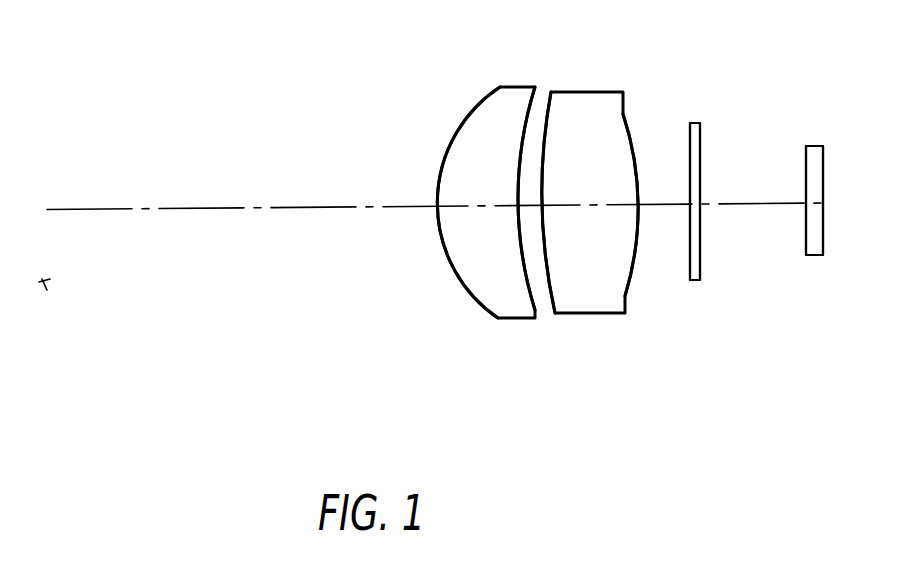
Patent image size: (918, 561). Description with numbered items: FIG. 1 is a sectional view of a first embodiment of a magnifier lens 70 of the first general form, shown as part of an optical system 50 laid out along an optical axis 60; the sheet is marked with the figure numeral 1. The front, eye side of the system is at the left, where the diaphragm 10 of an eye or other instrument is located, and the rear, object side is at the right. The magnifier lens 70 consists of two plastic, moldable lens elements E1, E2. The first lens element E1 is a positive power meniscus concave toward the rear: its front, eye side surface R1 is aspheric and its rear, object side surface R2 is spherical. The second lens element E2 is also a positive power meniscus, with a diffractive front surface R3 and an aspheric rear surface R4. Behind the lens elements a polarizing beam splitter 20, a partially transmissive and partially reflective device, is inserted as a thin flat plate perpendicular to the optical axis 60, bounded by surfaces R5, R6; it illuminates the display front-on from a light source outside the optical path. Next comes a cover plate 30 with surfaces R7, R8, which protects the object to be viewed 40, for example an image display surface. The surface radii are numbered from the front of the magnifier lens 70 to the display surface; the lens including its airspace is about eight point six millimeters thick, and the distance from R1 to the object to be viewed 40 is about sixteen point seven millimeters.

The imaging lens system 1 is at (44, 135).
The diaphragm 10 is at (46, 285).
The polarizing beam splitter 20 is at (696, 205).
The cover plate 30 is at (793, 202).
The object to be viewed 40 is at (849, 202).
The optical system 50 is at (730, 403).
The optical axis 60 is at (243, 208).
The magnifier lens 70 is at (526, 218).
The first lens element E1 is at (523, 318).
The second lens element E2 is at (590, 317).
The first surface radius R1 is at (460, 123).
The second surface radius R2 is at (516, 96).
The third surface radius R3 is at (556, 130).
The fourth surface radius R4 is at (637, 130).
The fifth surface radius R5 is at (690, 138).
The sixth surface radius R6 is at (702, 147).
The seventh surface radius R7 is at (806, 160).
The eighth surface radius R8 is at (823, 167).